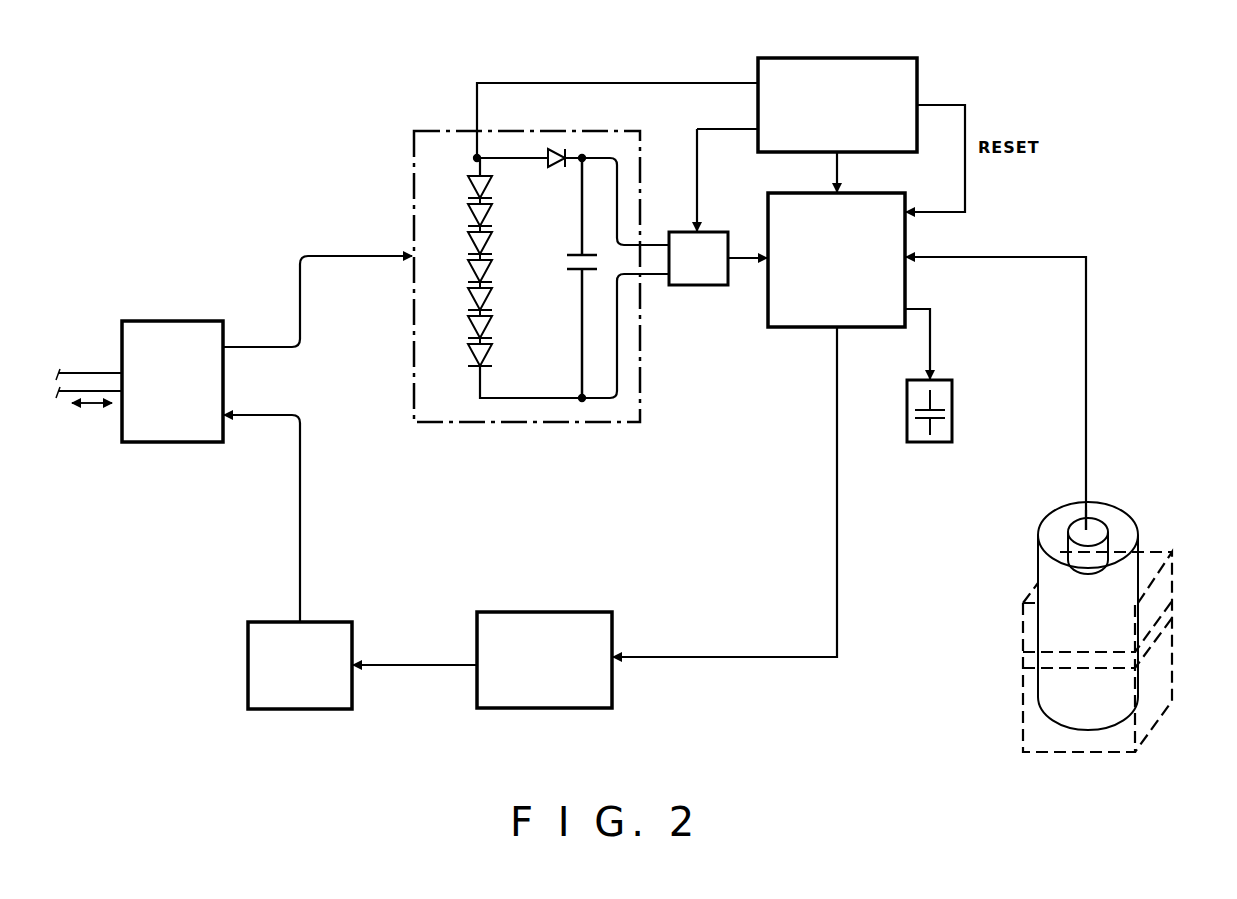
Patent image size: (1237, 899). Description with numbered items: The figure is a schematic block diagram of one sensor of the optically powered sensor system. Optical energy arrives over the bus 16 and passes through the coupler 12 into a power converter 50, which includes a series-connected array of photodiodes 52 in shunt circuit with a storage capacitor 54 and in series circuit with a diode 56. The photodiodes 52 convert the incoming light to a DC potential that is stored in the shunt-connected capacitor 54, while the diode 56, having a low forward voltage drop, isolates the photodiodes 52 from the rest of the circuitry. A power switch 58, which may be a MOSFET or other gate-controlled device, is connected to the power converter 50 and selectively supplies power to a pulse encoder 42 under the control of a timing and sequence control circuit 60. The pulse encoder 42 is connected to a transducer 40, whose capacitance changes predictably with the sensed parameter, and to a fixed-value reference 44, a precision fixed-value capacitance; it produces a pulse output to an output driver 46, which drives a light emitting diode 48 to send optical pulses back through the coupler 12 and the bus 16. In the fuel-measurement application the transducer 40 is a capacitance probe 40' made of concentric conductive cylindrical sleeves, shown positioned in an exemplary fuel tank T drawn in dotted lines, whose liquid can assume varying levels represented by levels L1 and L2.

The coupler 12 is at (170, 321).
The bus 16 is at (96, 373).
The transducer 40 is at (1016, 369).
The capacitance probe 40' is at (1114, 494).
The pulse encoder 42 is at (818, 330).
The fixed-value reference 44 is at (952, 418).
The output driver 46 is at (612, 612).
The light emitting diode 48 is at (308, 622).
The power converter 50 is at (412, 160).
The array of photodiodes 52 is at (488, 270).
The storage capacitor 54 is at (570, 270).
The diode 56 is at (553, 163).
The power switch 58 is at (690, 286).
The timing and sequence control circuit 60 is at (920, 76).
The fuel tank T is at (1020, 613).
The level L1 is at (1165, 612).
The level L2 is at (1165, 655).